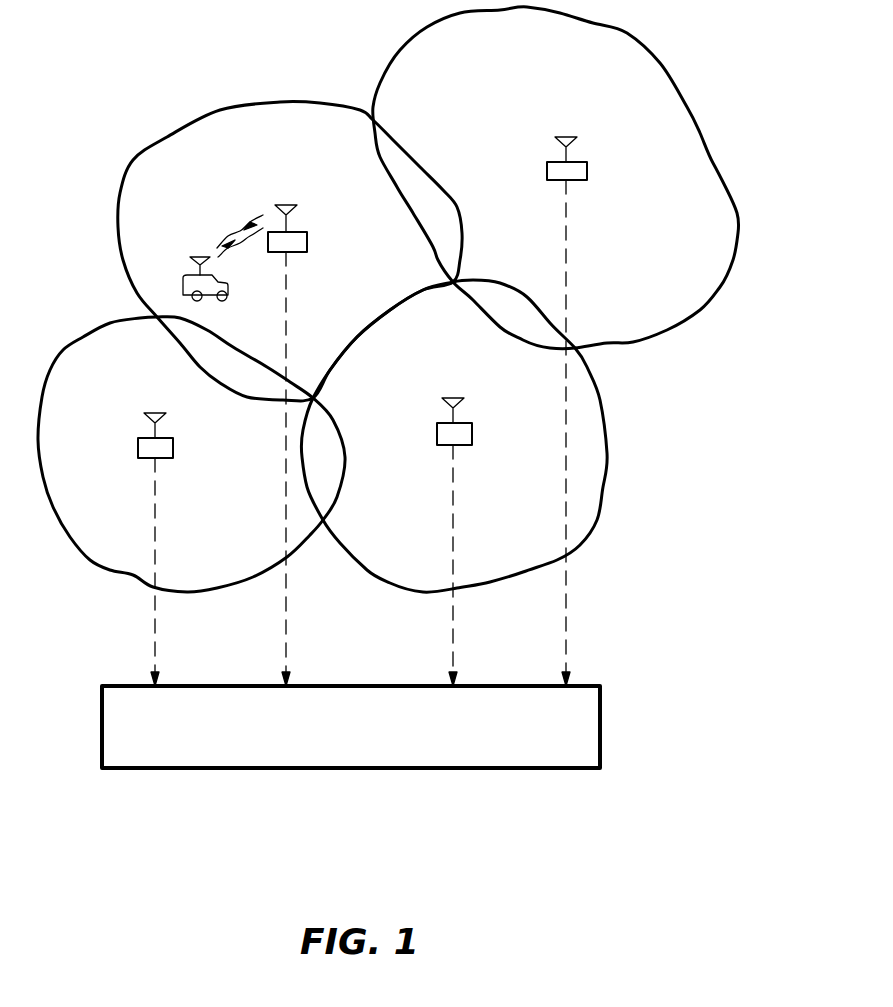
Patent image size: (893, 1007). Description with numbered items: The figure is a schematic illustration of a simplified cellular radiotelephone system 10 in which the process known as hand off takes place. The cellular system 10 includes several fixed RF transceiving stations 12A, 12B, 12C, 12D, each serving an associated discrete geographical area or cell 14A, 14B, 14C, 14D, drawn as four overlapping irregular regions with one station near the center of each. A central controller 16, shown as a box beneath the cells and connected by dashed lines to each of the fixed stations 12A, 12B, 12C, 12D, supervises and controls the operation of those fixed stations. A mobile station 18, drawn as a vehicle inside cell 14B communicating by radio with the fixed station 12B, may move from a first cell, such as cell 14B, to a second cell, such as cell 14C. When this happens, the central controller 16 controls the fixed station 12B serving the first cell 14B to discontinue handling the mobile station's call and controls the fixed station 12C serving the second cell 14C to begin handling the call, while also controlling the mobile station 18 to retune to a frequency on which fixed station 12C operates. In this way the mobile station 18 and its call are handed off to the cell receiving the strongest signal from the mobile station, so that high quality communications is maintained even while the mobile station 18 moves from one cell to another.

The cellular radiotelephone system 10 is at (397, 387).
The fixed RF transceiving station 12A is at (138, 447).
The fixed RF transceiving station 12B is at (307, 242).
The fixed RF transceiving station 12C is at (437, 433).
The fixed RF transceiving station 12D is at (588, 172).
The cell 14A is at (87, 334).
The cell 14B is at (225, 110).
The cell 14C is at (607, 440).
The cell 14D is at (697, 108).
The central controller 16 is at (602, 740).
The mobile station 18 is at (185, 273).